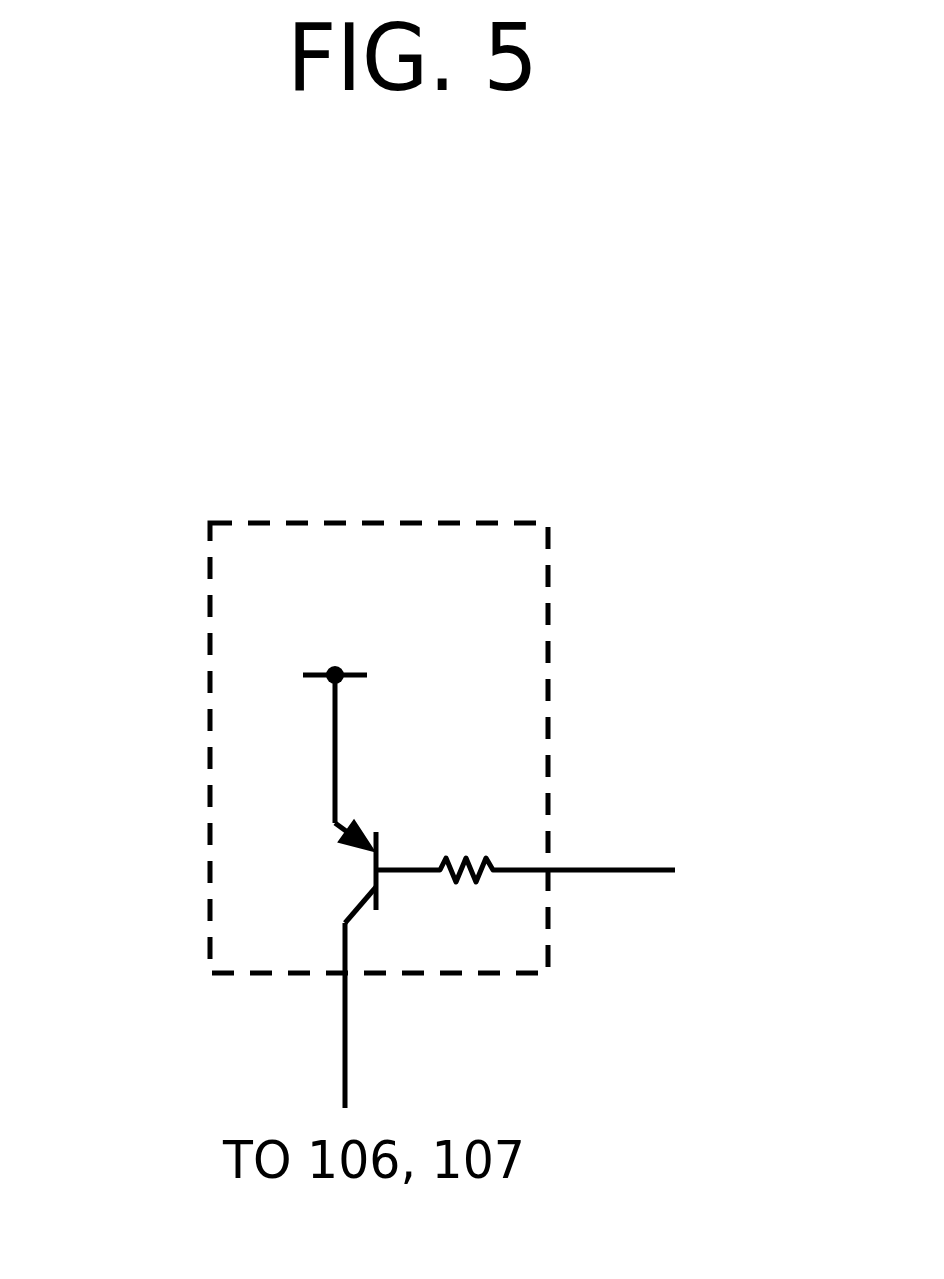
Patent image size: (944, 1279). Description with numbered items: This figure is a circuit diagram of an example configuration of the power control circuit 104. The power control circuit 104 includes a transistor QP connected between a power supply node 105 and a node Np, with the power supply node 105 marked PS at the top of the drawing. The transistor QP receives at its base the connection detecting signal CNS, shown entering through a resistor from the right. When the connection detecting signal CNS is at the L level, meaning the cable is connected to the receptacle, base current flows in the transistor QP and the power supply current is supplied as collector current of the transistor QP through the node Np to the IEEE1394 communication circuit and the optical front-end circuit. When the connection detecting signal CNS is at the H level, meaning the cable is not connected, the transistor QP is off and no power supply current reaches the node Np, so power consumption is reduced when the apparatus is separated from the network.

The power control circuit 104 is at (435, 523).
The power supply node 105 is at (337, 767).
The transistor QP is at (368, 863).
The power supply node PS is at (335, 639).
The connection detecting signal CNS is at (593, 865).
The node Np is at (347, 1068).